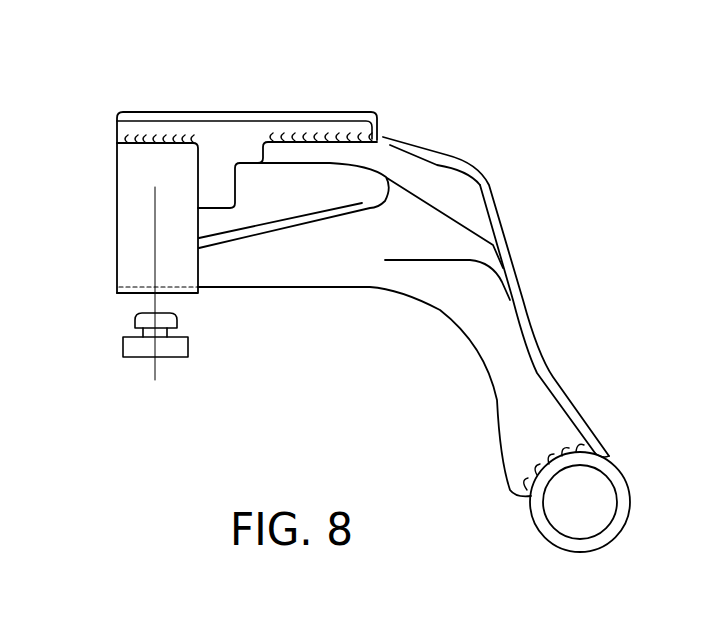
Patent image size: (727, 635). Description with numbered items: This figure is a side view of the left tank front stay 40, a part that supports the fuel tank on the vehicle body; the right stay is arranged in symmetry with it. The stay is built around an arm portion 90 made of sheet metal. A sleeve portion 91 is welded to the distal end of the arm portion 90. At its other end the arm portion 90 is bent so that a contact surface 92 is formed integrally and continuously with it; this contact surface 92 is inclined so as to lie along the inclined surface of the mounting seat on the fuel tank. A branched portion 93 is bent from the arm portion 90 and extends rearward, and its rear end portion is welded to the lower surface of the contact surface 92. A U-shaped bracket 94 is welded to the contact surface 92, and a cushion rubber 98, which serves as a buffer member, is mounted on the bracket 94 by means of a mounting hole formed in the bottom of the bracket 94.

The tank front stay 40 is at (507, 212).
The arm portion 90 is at (503, 298).
The sleeve portion 91 is at (617, 475).
The contact surface 92 is at (225, 111).
The branched portion 93 is at (407, 167).
The bracket 94 is at (116, 222).
The cushion rubber 98 is at (125, 352).